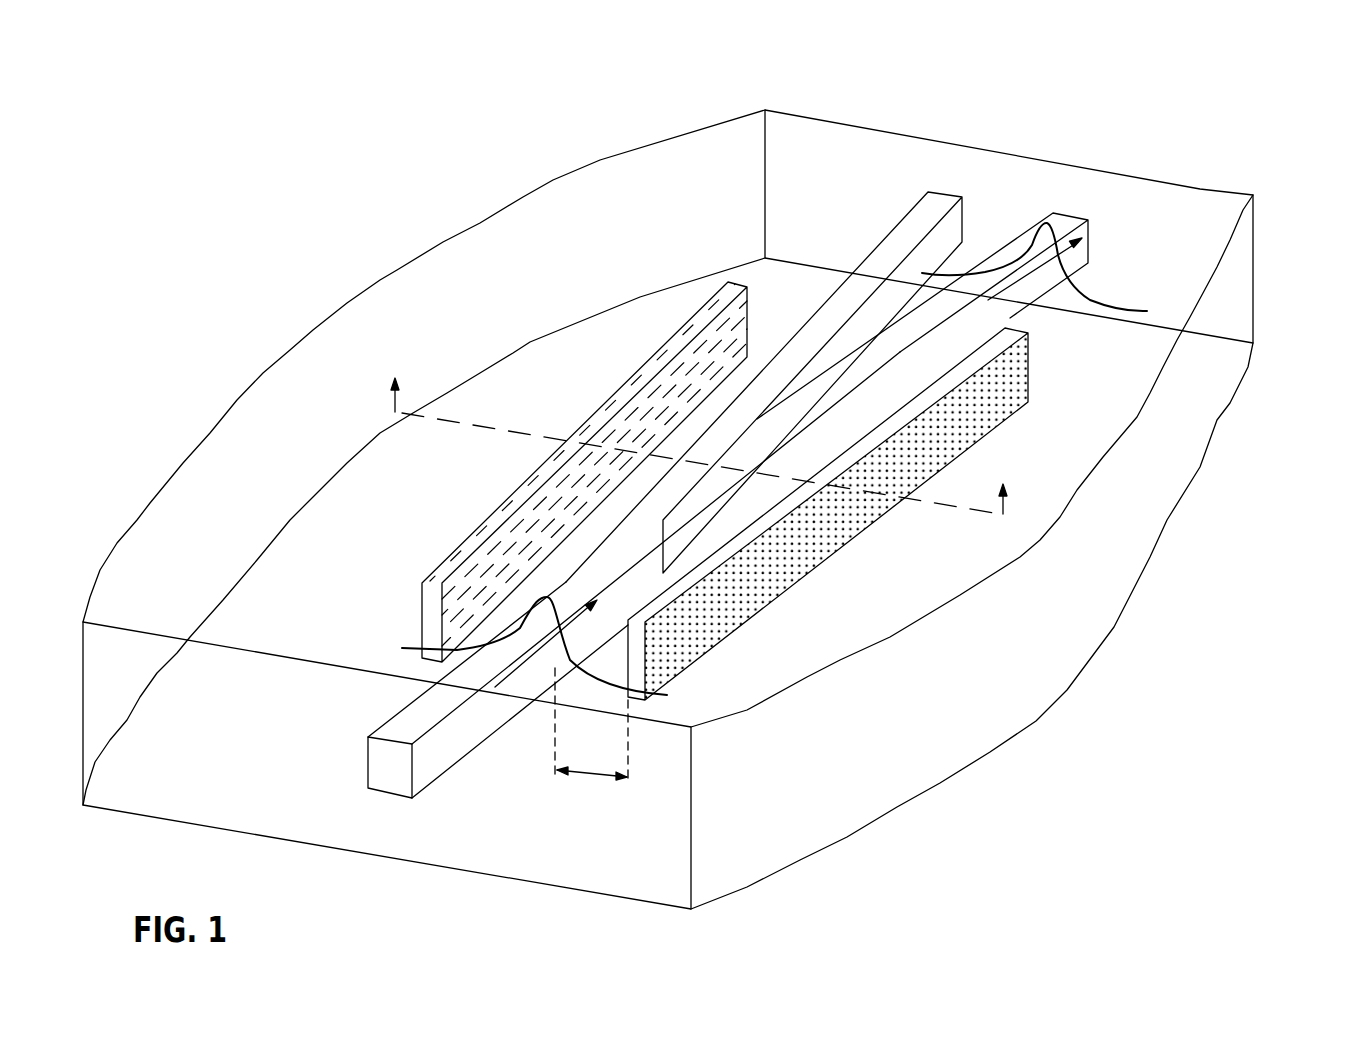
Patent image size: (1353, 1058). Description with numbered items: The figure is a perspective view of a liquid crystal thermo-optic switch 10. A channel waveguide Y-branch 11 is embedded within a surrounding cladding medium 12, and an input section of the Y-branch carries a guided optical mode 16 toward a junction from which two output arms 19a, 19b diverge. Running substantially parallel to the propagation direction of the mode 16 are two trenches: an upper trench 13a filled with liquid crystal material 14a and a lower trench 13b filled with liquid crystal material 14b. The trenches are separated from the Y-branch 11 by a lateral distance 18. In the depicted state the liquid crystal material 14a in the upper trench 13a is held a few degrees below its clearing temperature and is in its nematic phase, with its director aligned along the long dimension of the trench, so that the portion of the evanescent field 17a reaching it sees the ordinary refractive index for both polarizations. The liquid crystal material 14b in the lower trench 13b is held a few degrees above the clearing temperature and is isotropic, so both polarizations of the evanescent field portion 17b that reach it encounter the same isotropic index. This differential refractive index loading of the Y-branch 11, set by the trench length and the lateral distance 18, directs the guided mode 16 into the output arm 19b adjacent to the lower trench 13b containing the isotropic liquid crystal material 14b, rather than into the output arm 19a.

The liquid crystal thermo-optic switch 10 is at (704, 491).
The channel waveguide Y-branch 11 is at (825, 501).
The cladding medium 12 is at (825, 138).
The upper trench 13a is at (695, 310).
The lower trench 13b is at (1022, 366).
The liquid crystal material in upper trench 14a is at (653, 360).
The liquid crystal material in lower trench 14b is at (1000, 419).
The optical mode 16 is at (590, 678).
The evanescent field portion reaching nematic liquid crystal 17a is at (423, 650).
The evanescent field portion reaching isotropic liquid crystal 17b is at (640, 682).
The lateral distance 18 is at (591, 739).
The output arm 19a is at (930, 207).
The output arm 19b is at (1067, 224).